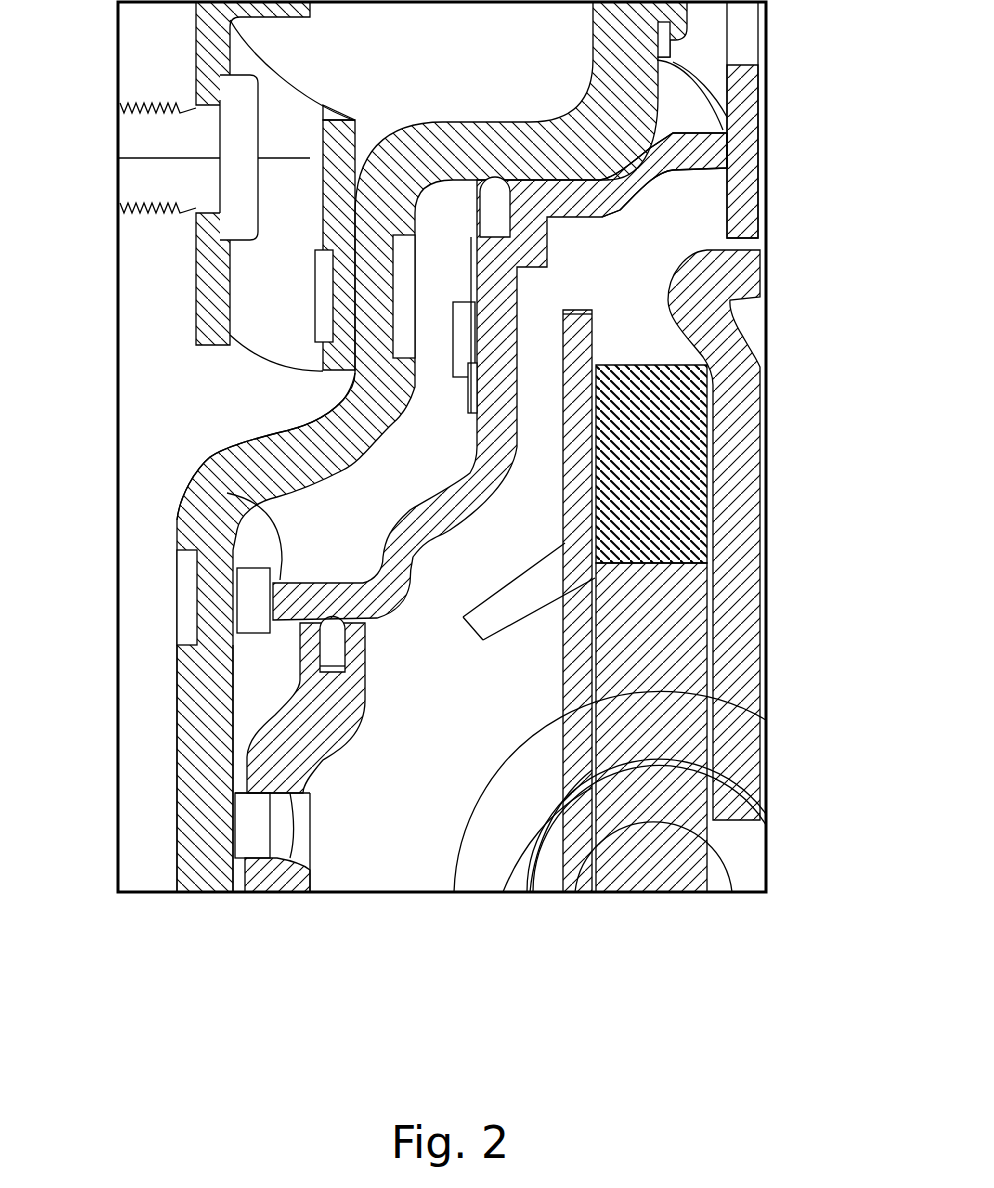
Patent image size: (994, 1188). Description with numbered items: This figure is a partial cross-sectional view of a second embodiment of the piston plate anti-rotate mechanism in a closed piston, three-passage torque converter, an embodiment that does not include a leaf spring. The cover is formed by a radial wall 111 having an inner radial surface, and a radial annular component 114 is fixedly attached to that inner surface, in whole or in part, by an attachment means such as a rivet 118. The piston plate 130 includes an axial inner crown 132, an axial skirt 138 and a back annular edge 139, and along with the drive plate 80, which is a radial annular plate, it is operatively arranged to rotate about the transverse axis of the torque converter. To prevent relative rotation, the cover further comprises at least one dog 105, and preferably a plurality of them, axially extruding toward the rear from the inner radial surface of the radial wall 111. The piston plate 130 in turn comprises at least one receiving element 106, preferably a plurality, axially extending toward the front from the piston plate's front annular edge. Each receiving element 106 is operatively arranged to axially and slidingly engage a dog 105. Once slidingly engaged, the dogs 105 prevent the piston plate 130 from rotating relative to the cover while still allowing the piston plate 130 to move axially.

The drive plate 80 is at (740, 120).
The dog 105 is at (253, 610).
The receiving element 106 is at (223, 475).
The radial wall 111 is at (208, 740).
The radial annular component 114 is at (293, 760).
The rivet 118 is at (258, 835).
The piston plate 130 is at (343, 410).
The axial inner crown 132 is at (357, 600).
The axial skirt 138 is at (647, 187).
The back annular edge 139 is at (727, 157).